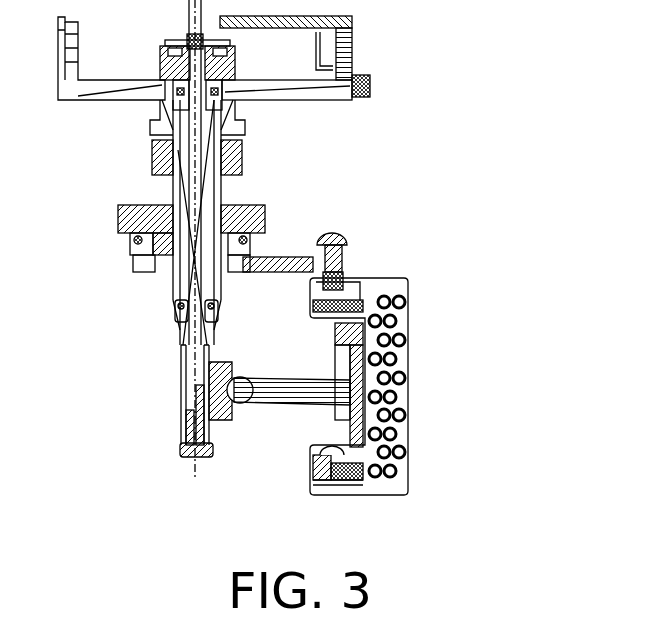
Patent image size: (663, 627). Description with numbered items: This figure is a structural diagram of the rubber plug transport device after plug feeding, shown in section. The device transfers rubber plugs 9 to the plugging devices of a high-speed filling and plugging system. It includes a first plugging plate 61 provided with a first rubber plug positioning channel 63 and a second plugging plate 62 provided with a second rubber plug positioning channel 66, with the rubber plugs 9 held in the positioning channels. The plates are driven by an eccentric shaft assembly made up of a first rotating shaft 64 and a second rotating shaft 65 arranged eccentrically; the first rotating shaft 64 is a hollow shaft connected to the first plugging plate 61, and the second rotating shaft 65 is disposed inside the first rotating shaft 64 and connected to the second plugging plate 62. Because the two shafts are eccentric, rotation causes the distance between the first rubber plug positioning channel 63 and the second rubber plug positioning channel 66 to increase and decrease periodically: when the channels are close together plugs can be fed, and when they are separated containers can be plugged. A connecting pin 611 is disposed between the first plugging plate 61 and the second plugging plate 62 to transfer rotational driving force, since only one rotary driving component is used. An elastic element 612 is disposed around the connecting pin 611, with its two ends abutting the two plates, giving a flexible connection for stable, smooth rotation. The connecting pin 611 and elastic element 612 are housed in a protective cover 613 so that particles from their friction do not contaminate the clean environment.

The rubber plug 9 is at (407, 303).
The first plugging plate 61 is at (362, 278).
The second plugging plate 62 is at (343, 480).
The first rubber plug positioning channel 63 is at (405, 294).
The first rotating shaft 64 is at (242, 207).
The second rotating shaft 65 is at (186, 403).
The second rubber plug positioning channel 66 is at (390, 297).
The connecting pin 611 is at (310, 490).
The elastic element 612 is at (313, 460).
The protective cover 613 is at (310, 463).